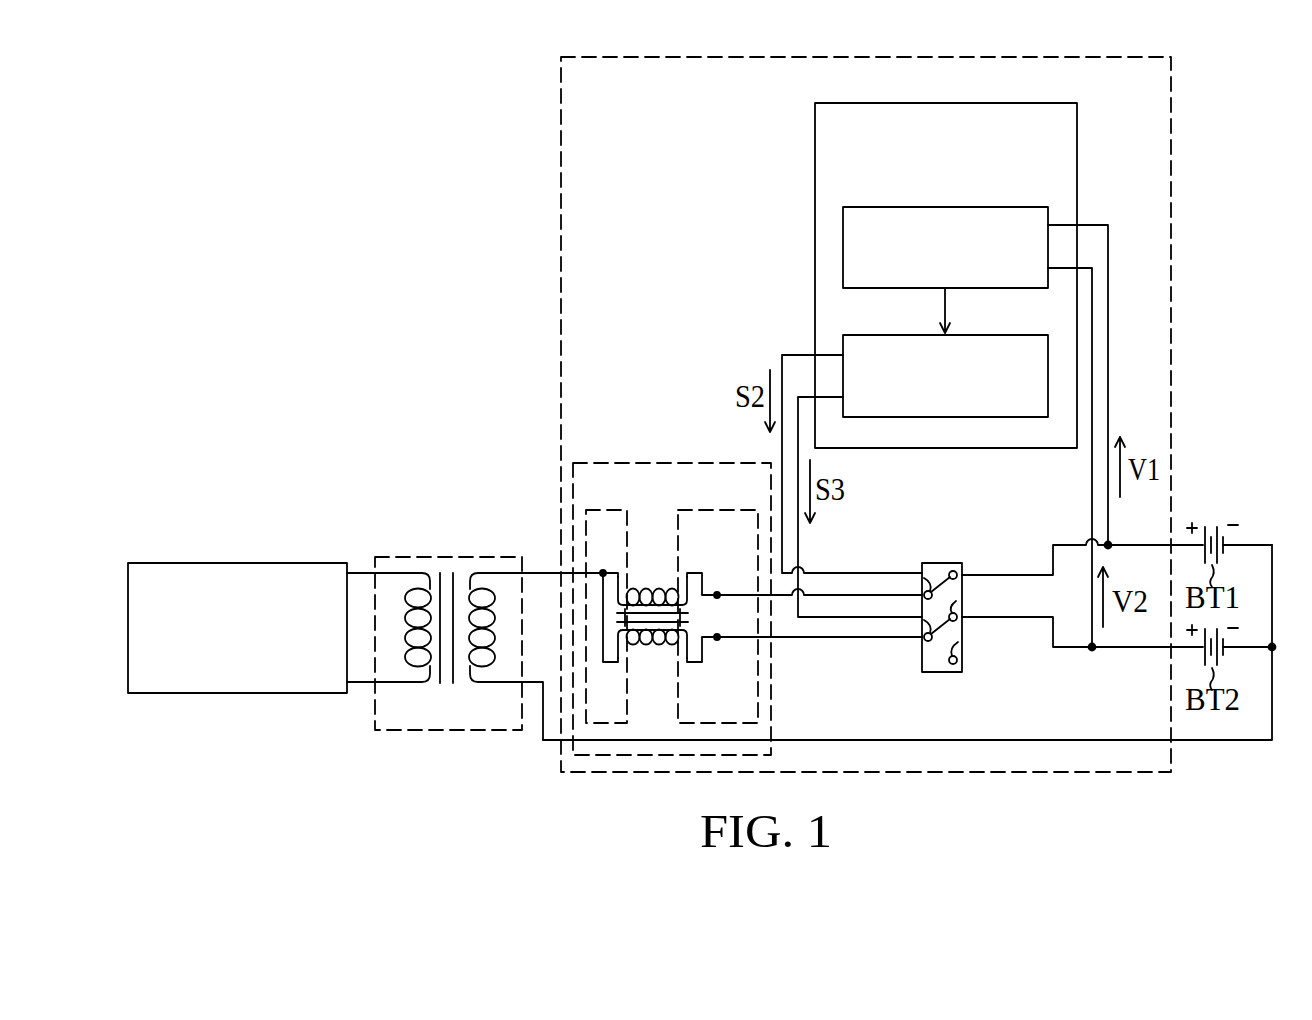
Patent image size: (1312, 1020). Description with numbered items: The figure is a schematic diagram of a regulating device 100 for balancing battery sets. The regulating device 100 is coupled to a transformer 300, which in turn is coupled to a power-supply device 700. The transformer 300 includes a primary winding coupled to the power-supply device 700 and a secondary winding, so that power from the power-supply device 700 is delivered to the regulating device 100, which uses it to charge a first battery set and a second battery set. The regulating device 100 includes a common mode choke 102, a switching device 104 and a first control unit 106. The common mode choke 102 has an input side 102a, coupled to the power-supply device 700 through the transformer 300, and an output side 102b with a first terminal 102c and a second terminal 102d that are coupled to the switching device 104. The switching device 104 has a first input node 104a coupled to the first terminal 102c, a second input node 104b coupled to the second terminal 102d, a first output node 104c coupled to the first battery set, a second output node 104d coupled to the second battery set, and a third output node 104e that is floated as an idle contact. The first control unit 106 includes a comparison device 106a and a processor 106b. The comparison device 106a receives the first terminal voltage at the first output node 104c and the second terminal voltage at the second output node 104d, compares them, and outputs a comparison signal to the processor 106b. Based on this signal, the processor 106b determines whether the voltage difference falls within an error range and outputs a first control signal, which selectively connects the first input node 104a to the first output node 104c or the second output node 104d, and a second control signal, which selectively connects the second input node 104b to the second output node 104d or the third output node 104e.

The regulating device 100 is at (563, 52).
The common mode choke 102 is at (575, 460).
The input side 102a is at (588, 508).
The output side 102b is at (680, 508).
The first terminal 102c is at (717, 590).
The second terminal 102d is at (717, 642).
The switching device 104 is at (938, 562).
The first input node 104a is at (925, 568).
The second input node 104b is at (920, 652).
The first output node 104c is at (957, 566).
The second output node 104d is at (962, 611).
The third output node 104e is at (962, 652).
The first control unit 106 is at (818, 100).
The comparison device 106a is at (845, 205).
The processor 106b is at (845, 333).
The transformer 300 is at (376, 556).
The power-supply device 700 is at (128, 563).